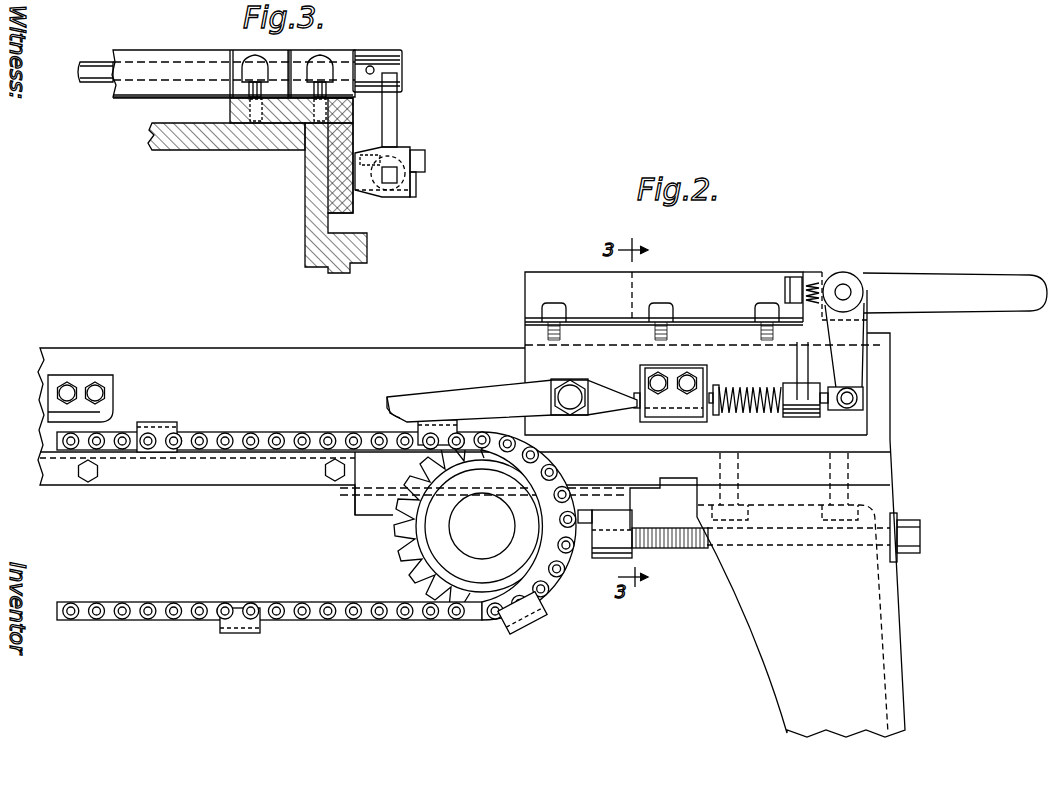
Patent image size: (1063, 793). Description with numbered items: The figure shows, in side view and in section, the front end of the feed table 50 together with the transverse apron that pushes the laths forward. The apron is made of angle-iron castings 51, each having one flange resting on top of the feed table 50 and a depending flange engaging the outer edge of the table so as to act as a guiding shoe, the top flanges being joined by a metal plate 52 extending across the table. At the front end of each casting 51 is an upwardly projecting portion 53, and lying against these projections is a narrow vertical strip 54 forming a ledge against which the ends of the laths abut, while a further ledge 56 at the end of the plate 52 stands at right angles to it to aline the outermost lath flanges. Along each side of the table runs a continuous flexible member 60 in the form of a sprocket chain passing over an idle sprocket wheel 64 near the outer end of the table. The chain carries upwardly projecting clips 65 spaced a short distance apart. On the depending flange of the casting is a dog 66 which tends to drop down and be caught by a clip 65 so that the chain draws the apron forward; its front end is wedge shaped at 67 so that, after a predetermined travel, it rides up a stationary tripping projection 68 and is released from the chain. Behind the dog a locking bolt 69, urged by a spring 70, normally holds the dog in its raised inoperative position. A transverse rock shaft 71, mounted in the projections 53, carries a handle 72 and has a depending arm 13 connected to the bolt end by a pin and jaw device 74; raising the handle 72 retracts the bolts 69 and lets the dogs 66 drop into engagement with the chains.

In FIG. 3, the lever 13 is at (390, 125).
In FIG. 2, the lever 13 is at (840, 357).
In FIG. 3, the feed table 50 is at (170, 138).
In FIG. 2, the feed table 50 is at (313, 353).
In FIG. 3, the castings 51 is at (345, 128).
In FIG. 2, the castings 51 is at (646, 389).
In FIG. 3, the metal plate 52 is at (141, 94).
In FIG. 2, the metal plate 52 is at (597, 327).
In FIG. 2, the upwardly projecting portion 53 is at (812, 272).
In FIG. 3, the vertical plate or strip 54 is at (188, 55).
In FIG. 2, the vertical plate or strip 54 is at (800, 277).
In FIG. 3, the ledge 56 is at (290, 53).
In FIG. 2, the ledge 56 is at (548, 283).
In FIG. 2, the continuous flexible member 60 is at (257, 440).
In FIG. 2, the idle sprocket wheel 64 is at (442, 590).
In FIG. 2, the clips 65 is at (163, 432).
In FIG. 2, the dog 66 is at (485, 396).
In FIG. 2, the wedge shaped end 67 is at (388, 410).
In FIG. 2, the tripping projection 68 is at (55, 412).
In FIG. 3, the locking bolt 69 is at (397, 173).
In FIG. 2, the locking bolt 69 is at (713, 400).
In FIG. 2, the spring 70 is at (732, 392).
In FIG. 3, the rock shaft 71 is at (95, 72).
In FIG. 2, the rock shaft 71 is at (848, 288).
In FIG. 2, the handle 72 is at (918, 277).
In FIG. 2, the pin and jaw device 74 is at (855, 398).